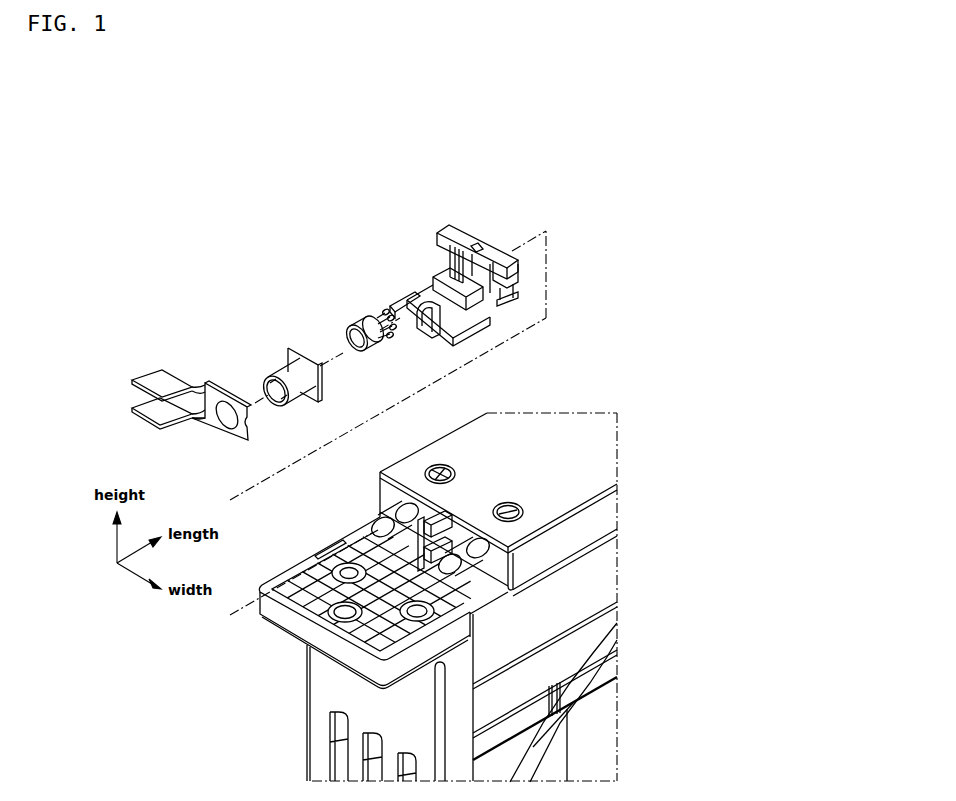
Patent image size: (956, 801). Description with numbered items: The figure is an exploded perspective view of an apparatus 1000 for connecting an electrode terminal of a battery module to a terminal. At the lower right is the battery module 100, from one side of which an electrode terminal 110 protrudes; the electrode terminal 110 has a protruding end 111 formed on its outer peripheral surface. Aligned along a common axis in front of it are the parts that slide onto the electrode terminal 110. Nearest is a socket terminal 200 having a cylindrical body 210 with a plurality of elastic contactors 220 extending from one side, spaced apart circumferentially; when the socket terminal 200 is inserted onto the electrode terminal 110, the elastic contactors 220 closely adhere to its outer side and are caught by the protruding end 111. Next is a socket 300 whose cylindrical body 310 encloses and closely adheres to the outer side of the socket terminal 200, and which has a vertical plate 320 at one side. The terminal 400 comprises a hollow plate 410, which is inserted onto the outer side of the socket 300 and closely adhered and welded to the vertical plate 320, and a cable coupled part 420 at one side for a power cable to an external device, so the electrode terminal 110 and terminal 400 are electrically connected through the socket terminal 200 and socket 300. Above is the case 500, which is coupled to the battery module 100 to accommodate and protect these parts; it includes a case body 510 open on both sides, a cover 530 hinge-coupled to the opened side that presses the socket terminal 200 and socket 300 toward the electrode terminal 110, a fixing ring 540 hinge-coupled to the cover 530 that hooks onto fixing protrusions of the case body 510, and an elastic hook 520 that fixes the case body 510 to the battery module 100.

The apparatus for connecting between an electrode terminal of a battery module and a 1000 is at (262, 258).
The battery module 100 is at (578, 405).
The electrode terminal 110 is at (385, 512).
The protruding end 111 is at (378, 524).
The socket terminal 200 is at (342, 322).
The cylindrical body 210 is at (374, 346).
The elastic contactors 220 is at (376, 316).
The socket 300 is at (268, 360).
The cylindrical body 310 is at (296, 395).
The vertical plate 320 is at (320, 372).
The terminal 400 is at (210, 372).
The hollow plate 410 is at (215, 425).
The cable coupled part 420 is at (153, 373).
The case 500 is at (496, 228).
The case body 510 is at (440, 225).
The elastic hook 520 is at (495, 305).
The cover 530 is at (430, 286).
The fixing ring 540 is at (412, 301).